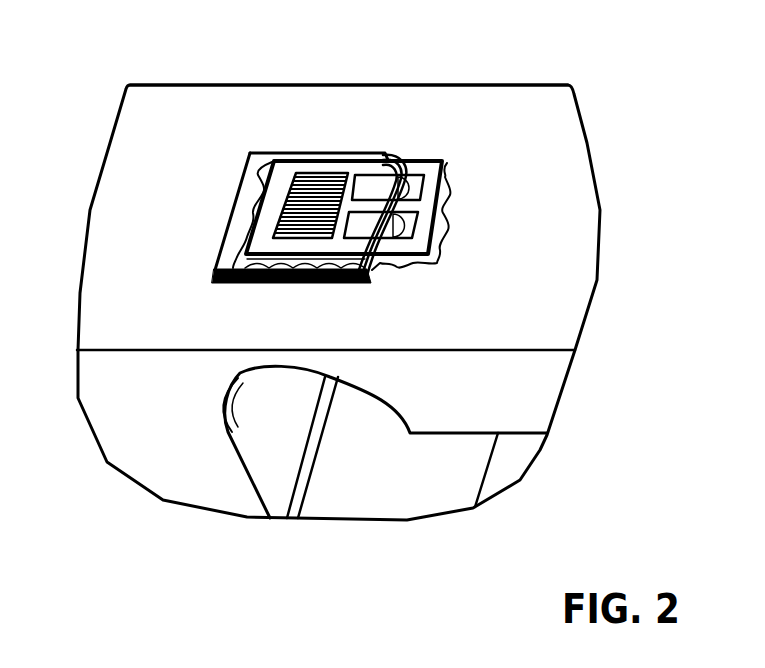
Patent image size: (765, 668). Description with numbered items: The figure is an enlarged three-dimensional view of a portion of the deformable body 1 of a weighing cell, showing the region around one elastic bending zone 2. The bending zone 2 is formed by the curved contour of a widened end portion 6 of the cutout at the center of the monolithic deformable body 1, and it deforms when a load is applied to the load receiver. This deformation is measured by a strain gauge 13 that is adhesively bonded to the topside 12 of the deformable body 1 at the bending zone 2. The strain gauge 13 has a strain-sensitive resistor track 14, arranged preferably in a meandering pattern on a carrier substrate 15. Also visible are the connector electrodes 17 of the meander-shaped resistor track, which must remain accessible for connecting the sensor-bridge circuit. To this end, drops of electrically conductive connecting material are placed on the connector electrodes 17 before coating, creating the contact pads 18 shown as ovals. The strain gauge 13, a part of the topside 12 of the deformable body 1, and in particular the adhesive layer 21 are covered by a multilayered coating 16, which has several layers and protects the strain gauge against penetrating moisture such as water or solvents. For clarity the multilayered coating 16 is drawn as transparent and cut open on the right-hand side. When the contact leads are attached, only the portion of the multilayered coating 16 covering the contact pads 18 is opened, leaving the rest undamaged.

The deformable body 1 is at (577, 377).
The elastic bending zone 2 is at (283, 355).
The widened end portion 6 is at (345, 455).
The topside 12 is at (478, 115).
The strain gauge 13 is at (317, 168).
The strain-sensitive resistor track 14 is at (300, 172).
The carrier substrate 15 is at (278, 173).
The multilayered coating 16 is at (248, 183).
The connector electrodes 17 is at (368, 183).
The contact pads 18 is at (420, 218).
The adhesive layer 21 is at (240, 243).